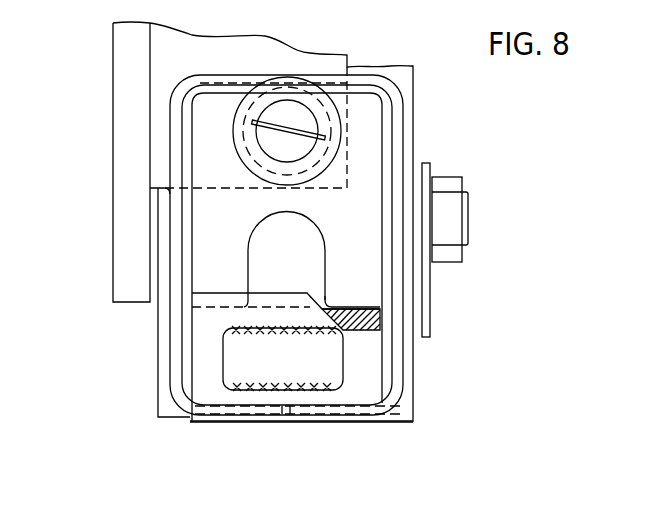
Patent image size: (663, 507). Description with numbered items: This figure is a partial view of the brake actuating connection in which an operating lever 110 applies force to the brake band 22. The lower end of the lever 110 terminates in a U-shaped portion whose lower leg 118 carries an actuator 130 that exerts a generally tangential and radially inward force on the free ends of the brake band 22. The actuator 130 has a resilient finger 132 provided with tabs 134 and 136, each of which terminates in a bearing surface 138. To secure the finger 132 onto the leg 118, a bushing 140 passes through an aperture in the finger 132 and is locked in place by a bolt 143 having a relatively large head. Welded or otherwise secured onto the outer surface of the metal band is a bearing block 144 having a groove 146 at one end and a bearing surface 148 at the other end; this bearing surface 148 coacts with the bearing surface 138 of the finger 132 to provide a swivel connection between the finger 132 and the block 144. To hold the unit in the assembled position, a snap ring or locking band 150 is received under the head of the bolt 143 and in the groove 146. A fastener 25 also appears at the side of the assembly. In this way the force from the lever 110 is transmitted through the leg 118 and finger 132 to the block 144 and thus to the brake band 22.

The operating lever 110 is at (112, 157).
The lower leg 118 is at (160, 121).
The brake band 22 is at (415, 378).
The fastener bolt 25 is at (466, 212).
The actuator 130 is at (213, 427).
The resilient finger 132 is at (197, 252).
The tab 134 is at (373, 297).
The tab 136 is at (207, 272).
The bearing surface 138 is at (378, 313).
The bushing 140 is at (325, 105).
The bolt 143 is at (268, 88).
The bearing block 144 is at (360, 373).
The groove 146 is at (350, 406).
The bearing surface 148 is at (342, 304).
The locking band 150 is at (173, 377).